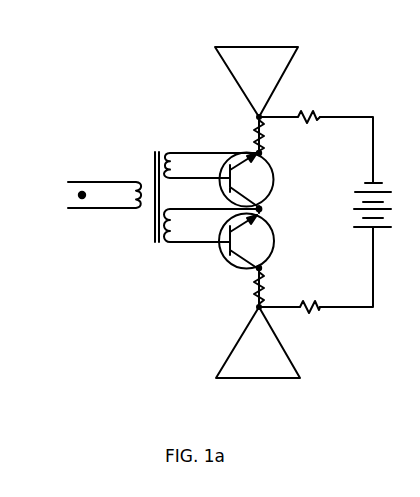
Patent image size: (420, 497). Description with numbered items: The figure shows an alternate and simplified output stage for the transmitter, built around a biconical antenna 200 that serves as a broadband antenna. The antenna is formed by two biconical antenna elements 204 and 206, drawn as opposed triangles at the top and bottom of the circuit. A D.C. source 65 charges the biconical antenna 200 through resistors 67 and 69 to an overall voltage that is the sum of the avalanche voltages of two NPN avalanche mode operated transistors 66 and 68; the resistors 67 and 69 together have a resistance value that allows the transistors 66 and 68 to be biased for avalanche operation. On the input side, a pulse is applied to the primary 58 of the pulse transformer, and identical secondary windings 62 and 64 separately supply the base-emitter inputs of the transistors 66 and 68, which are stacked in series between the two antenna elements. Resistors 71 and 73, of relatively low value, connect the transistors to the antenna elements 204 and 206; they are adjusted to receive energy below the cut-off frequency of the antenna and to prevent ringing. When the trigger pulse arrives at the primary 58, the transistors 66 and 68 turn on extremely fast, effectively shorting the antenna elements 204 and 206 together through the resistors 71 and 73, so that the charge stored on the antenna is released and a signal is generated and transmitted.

The biconical antenna 200 is at (288, 31).
The biconical antenna element 204 is at (288, 71).
The biconical antenna element 206 is at (291, 360).
The primary 58 is at (138, 184).
The secondary winding 62 is at (170, 158).
The secondary winding 64 is at (170, 243).
The avalanche transistor 66 is at (274, 179).
The avalanche transistor 68 is at (274, 241).
The resistor 71 is at (256, 130).
The resistor 73 is at (263, 284).
The resistor 67 is at (305, 122).
The resistor 69 is at (314, 304).
The D.C. source 65 is at (376, 183).